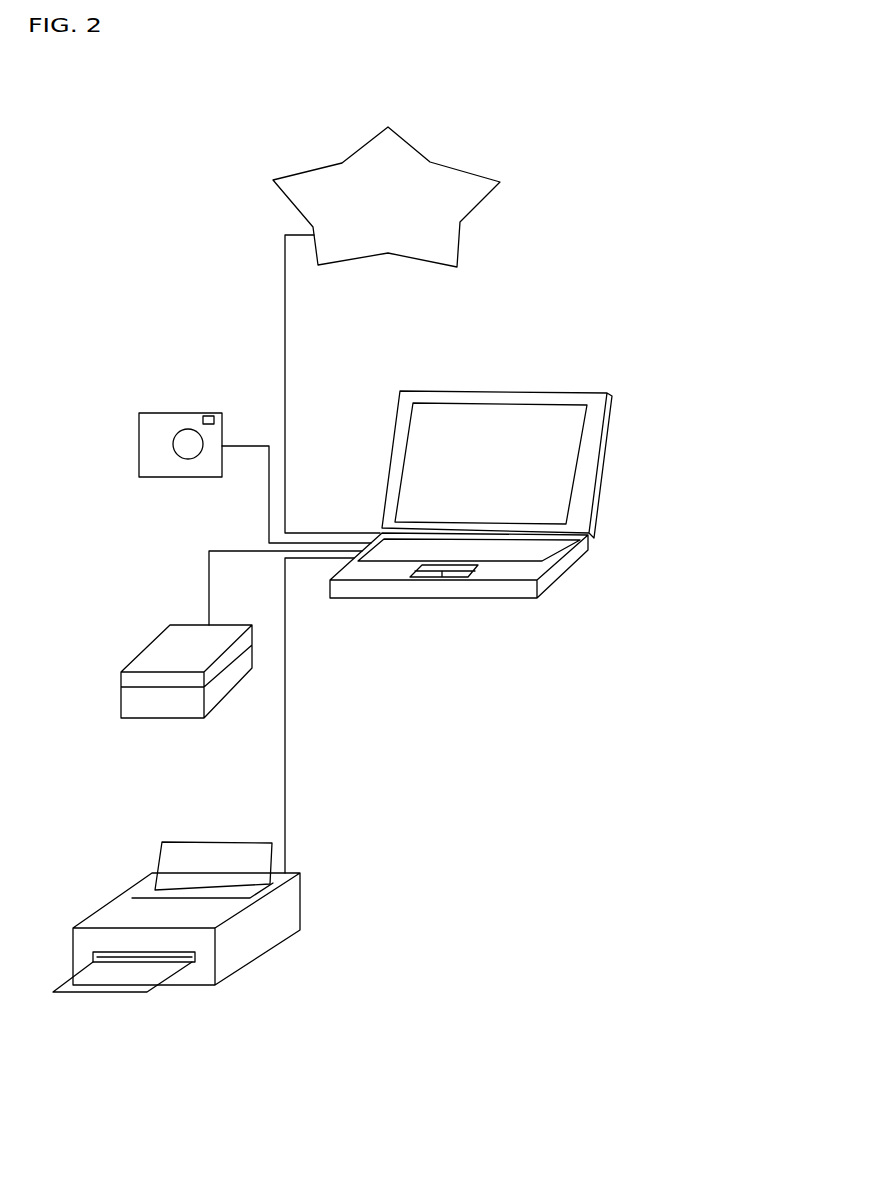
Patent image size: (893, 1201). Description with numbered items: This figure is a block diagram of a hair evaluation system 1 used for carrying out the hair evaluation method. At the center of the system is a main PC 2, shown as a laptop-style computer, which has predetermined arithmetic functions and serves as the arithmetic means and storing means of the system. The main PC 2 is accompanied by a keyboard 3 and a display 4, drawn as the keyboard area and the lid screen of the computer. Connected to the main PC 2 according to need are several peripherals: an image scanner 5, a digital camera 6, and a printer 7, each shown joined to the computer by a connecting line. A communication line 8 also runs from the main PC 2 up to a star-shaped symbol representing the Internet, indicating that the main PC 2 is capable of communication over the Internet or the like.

The hair evaluation system 1 is at (352, 1047).
The main PC 2 is at (497, 592).
The keyboard 3 is at (530, 545).
The display 4 is at (553, 441).
The image scanner 5 is at (220, 651).
The digital camera 6 is at (224, 462).
The printer 7 is at (203, 793).
The communication line 8 is at (285, 339).